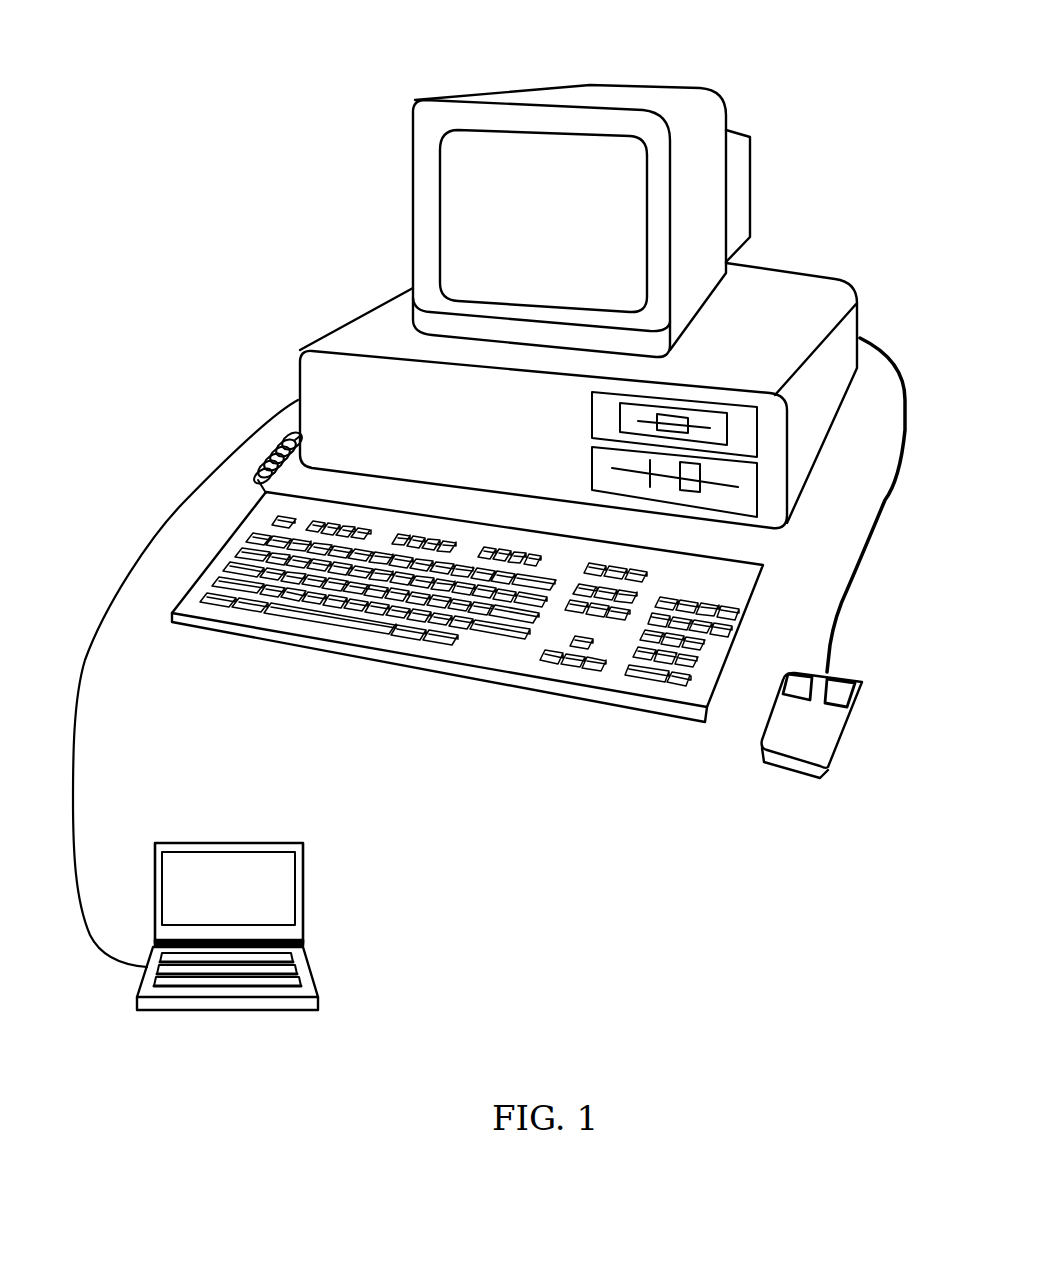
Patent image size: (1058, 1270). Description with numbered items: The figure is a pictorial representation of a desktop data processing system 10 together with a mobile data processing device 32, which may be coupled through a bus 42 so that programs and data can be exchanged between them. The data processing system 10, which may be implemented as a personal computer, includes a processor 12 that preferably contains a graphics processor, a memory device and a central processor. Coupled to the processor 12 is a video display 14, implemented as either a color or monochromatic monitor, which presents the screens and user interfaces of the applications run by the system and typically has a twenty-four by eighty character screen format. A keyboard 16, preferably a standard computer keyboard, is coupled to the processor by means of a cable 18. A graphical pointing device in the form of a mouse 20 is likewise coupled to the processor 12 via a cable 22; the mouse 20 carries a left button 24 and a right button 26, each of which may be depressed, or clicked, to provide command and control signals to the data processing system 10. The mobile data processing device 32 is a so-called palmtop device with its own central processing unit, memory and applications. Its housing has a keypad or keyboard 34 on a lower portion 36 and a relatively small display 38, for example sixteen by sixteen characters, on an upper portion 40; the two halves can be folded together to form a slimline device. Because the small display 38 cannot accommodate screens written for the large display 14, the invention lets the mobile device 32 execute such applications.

The data processing system 10 is at (342, 158).
The processor 12 is at (803, 500).
The video display 14 is at (629, 190).
The keyboard 16 is at (327, 633).
The cable 18 is at (255, 478).
The mouse 20 is at (811, 738).
The cable 22 is at (837, 617).
The left button 24 is at (787, 680).
The right button 26 is at (587, 157).
The mobile data processing device 32 is at (287, 921).
The keyboard 34 is at (270, 980).
The lower portion 36 is at (264, 1005).
The display 38 is at (247, 867).
The upper portion 40 is at (220, 863).
The bus 42 is at (107, 947).